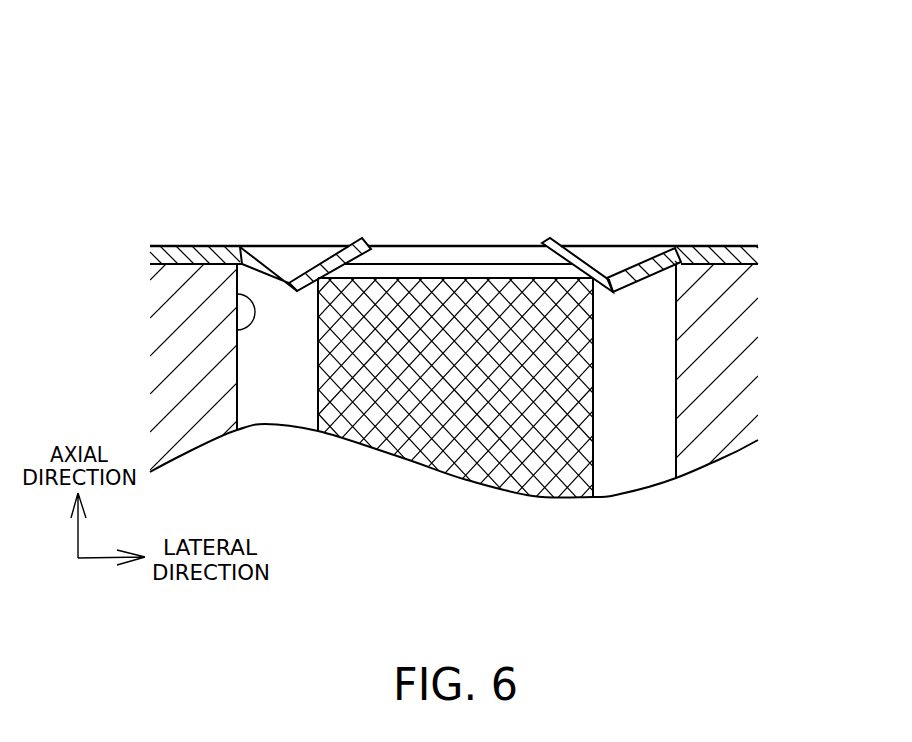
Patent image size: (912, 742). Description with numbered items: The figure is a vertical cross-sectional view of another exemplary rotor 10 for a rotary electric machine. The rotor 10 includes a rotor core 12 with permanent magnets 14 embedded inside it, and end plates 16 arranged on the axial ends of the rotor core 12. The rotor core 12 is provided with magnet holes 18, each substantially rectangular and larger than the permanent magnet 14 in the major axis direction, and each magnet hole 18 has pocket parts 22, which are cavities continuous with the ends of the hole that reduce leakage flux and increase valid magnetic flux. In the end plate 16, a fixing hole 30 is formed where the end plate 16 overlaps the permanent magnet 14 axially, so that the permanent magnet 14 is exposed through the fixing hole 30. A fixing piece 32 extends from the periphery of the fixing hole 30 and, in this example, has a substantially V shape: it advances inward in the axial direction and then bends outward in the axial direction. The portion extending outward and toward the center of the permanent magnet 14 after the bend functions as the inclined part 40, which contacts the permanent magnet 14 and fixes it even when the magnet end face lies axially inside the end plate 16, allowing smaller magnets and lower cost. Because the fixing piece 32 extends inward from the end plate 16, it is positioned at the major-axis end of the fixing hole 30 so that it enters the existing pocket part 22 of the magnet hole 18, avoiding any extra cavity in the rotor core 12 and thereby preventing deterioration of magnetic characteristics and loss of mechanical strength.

The rotor 10 is at (417, 95).
The rotor core 12 is at (723, 403).
The permanent magnet 14 is at (468, 278).
The end plate 16 is at (718, 246).
The magnet hole 18 is at (237, 330).
The pocket part 22 is at (289, 375).
The fixing hole 30 is at (398, 251).
The fixing piece 32 is at (306, 235).
The inclined part 40 is at (362, 238).